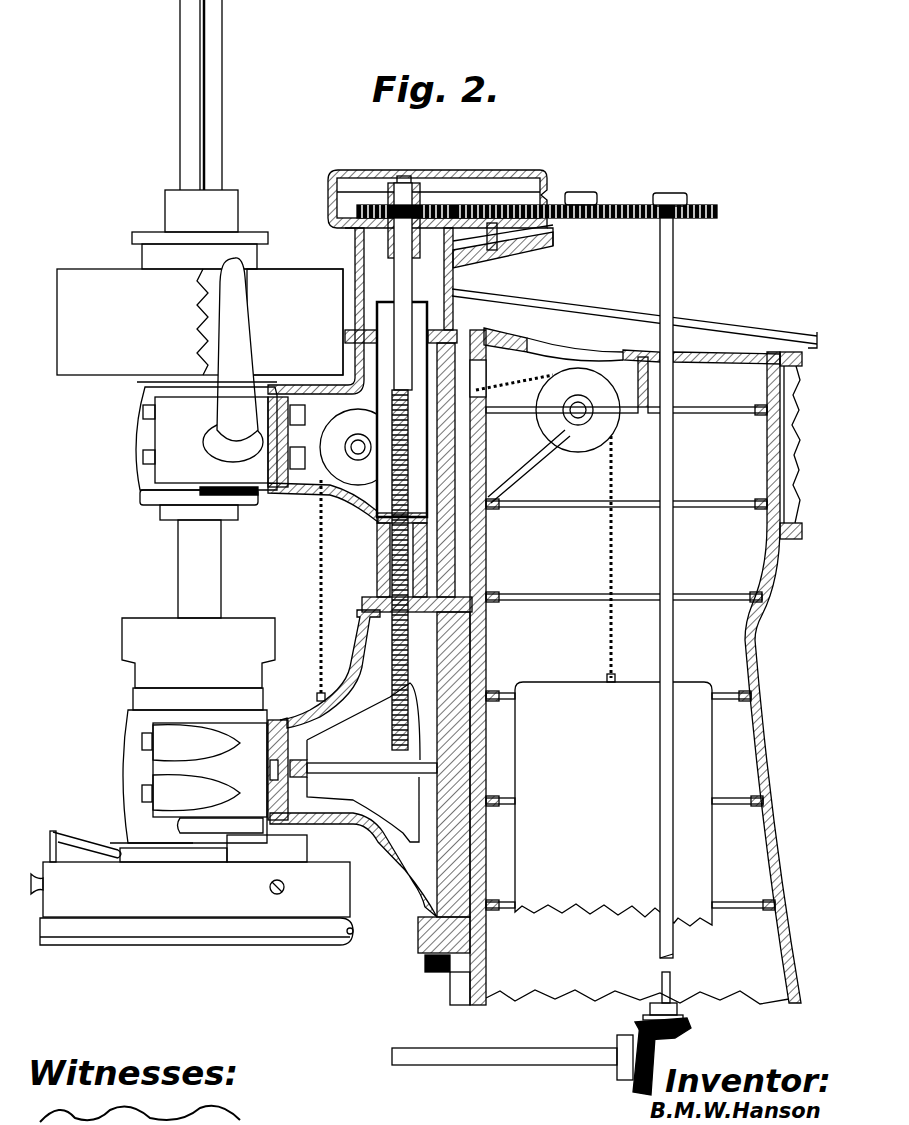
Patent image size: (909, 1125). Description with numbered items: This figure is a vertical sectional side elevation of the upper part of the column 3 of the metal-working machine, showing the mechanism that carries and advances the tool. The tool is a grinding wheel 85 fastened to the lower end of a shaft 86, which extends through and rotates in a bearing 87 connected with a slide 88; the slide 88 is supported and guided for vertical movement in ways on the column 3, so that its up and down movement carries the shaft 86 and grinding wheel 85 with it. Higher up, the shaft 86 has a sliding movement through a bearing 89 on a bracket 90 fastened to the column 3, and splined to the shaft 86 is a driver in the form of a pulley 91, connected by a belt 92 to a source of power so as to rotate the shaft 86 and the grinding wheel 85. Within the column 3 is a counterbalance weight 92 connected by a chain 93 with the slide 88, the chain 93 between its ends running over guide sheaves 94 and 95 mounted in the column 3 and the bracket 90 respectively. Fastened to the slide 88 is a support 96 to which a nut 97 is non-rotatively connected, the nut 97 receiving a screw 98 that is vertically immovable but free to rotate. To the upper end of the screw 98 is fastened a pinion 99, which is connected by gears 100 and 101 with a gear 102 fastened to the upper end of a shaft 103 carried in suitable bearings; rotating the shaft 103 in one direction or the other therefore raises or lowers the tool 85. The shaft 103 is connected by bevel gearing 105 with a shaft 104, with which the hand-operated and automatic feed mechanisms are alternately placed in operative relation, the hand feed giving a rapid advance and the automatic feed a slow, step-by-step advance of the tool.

The column 3 is at (757, 650).
The grinding wheel 85 is at (185, 945).
The shaft 86 is at (200, 578).
The bearing 87 is at (132, 770).
The slide 88 is at (445, 875).
The bearing 89 is at (137, 440).
The bracket 90 is at (290, 498).
The pulley 91 is at (305, 311).
The counterbalance weight 92 is at (384, 597).
The chain 93 is at (607, 548).
The guide sheave 94 is at (572, 440).
The guide sheave 95 is at (355, 470).
The support 96 is at (365, 605).
The nut 97 is at (455, 480).
The screw 98 is at (425, 660).
The pinion 99 is at (330, 210).
The gear 100 is at (462, 205).
The gear 101 is at (598, 200).
The gear 102 is at (718, 212).
The shaft 103 is at (668, 283).
The shaft 104 is at (455, 1060).
The bevel gearing 105 is at (665, 1049).